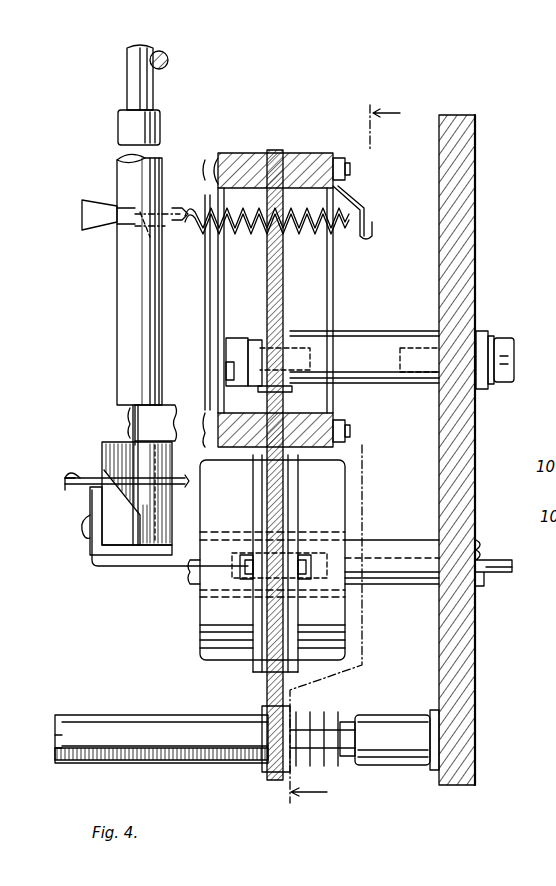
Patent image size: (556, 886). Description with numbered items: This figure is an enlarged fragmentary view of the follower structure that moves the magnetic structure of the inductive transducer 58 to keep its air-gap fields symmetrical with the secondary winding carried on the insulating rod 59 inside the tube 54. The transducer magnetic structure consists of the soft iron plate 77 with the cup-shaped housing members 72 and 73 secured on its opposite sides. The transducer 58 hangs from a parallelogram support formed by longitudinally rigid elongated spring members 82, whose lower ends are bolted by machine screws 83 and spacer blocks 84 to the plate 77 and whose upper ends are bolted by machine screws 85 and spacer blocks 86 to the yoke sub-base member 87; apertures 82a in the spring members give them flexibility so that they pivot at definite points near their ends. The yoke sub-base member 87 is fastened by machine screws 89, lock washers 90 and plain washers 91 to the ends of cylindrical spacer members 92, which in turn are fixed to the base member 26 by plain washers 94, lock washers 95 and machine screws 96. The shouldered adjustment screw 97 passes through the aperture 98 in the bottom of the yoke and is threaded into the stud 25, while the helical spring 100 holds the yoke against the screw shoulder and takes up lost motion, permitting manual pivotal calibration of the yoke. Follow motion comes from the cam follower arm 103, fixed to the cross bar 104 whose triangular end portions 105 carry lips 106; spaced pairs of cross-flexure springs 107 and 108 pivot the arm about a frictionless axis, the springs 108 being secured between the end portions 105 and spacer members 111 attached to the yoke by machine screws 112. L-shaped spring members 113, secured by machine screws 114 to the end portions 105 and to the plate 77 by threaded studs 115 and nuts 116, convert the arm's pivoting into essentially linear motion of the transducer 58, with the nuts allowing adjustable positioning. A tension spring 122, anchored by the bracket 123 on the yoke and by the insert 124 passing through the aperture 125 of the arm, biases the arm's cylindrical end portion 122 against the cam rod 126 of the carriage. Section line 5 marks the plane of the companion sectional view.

The section line 5 is at (351, 455).
The stud 25 is at (385, 760).
The base member 26 is at (458, 237).
The tube 54 is at (478, 542).
The inductive transducer 58 is at (355, 608).
The rod 59 is at (508, 560).
The cup-shaped housing member 72 is at (208, 628).
The cup-shaped housing member 73 is at (340, 637).
The plate 77 is at (270, 672).
The spring member 82 is at (218, 308).
The aperture 82a is at (225, 228).
The machine screw 83 is at (350, 432).
The spacer block 84 is at (240, 447).
The machine screw 85 is at (350, 172).
The spacer block 86 is at (238, 160).
The yoke sub-base member 87 is at (267, 283).
The machine screw 89 is at (232, 346).
The lock washer 90 is at (248, 330).
The plain washer 91 is at (258, 396).
The cylindrical spacer member 92 is at (398, 331).
The plain washer 94 is at (482, 331).
The lock washer 95 is at (491, 336).
The machine screw 96 is at (514, 350).
The shouldered adjustment screw 97 is at (90, 756).
The aperture 98 is at (264, 768).
The helical spring 100 is at (318, 700).
The cam follower arm 103 is at (124, 326).
The cross bar 104 is at (102, 449).
The end portion 105 is at (110, 548).
The lip 106 is at (65, 488).
The cross-flexure spring 107 is at (160, 478).
The cross-flexure spring 108 is at (165, 530).
The spacer member 111 is at (178, 410).
The machine screw 112 is at (130, 412).
The spring member 113 is at (125, 568).
The machine screw 114 is at (80, 528).
The screw-threaded stud 115 is at (305, 572).
The nut 116 is at (260, 578).
The tension spring 122 is at (127, 88).
The bracket 123 is at (366, 212).
The insert 124 is at (90, 228).
The aperture 125 is at (160, 240).
The cam rod 126 is at (168, 57).